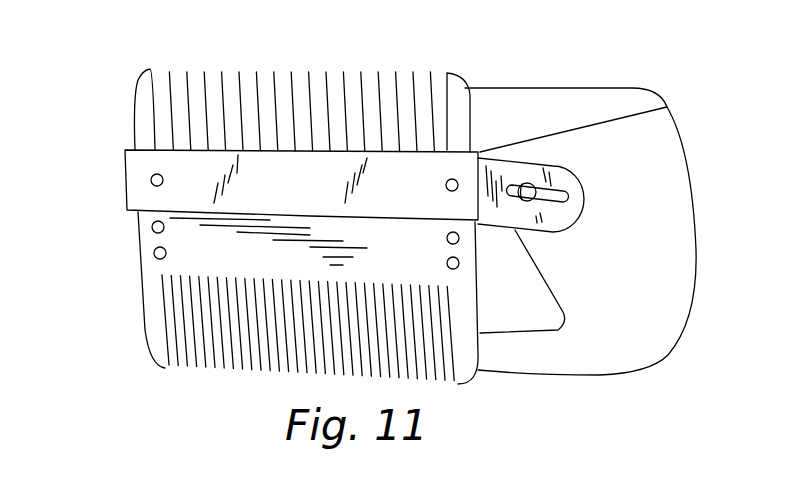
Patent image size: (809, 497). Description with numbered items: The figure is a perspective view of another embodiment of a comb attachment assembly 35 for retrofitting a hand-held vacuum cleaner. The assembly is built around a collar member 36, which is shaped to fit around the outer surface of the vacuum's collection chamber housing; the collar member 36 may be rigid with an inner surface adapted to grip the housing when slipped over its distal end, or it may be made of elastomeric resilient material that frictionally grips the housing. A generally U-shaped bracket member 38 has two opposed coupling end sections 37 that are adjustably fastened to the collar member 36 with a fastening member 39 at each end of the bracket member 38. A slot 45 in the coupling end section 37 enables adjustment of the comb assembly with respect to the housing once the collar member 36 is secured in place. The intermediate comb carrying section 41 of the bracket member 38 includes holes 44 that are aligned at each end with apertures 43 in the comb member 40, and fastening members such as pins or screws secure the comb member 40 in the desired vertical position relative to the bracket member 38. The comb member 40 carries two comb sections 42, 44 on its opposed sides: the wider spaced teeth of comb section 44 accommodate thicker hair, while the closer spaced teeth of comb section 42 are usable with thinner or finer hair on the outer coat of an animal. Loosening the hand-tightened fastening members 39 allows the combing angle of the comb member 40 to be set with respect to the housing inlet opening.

The comb attachment assembly 35 is at (623, 210).
The collar member 36 is at (641, 272).
The coupling end section 37 is at (560, 175).
The bracket member 38 is at (260, 205).
The fastening member 39 is at (527, 183).
The comb member 40 is at (285, 236).
The intermediate comb carrying section 41 is at (320, 197).
The comb section 42 is at (408, 380).
The apertures 43 is at (446, 263).
The holes / comb section 44 is at (376, 72).
The slot 45 is at (567, 196).